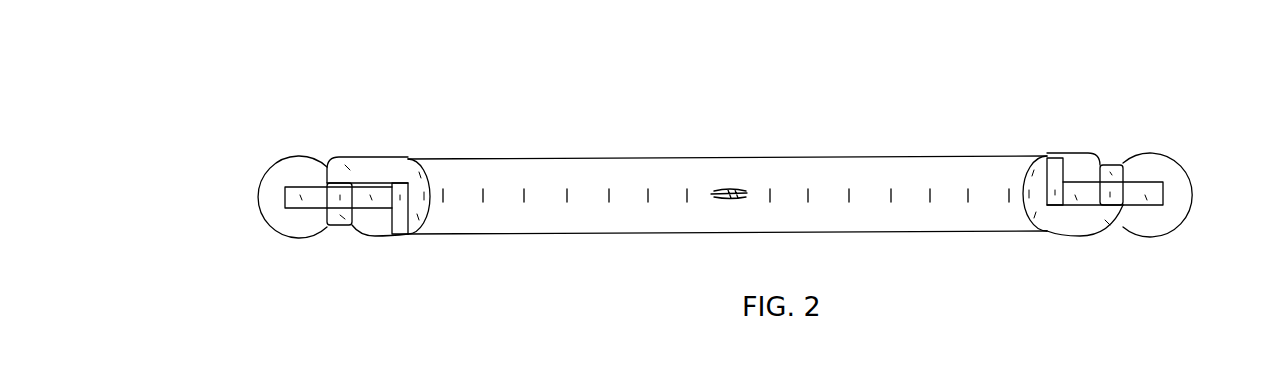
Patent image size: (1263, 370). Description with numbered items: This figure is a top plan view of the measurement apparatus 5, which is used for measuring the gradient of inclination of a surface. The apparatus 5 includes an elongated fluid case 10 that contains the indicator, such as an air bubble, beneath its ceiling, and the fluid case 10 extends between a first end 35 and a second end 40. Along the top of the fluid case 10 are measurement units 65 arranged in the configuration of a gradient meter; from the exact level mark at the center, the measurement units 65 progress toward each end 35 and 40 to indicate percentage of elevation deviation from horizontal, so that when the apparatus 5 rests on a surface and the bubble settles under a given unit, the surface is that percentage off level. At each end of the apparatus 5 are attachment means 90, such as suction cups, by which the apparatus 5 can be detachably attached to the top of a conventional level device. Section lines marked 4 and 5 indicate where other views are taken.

The section line 4- 4 is at (1260, 213).
The measurement apparatus 5 is at (250, 119).
The fluid case 10 is at (903, 155).
The first end 35 is at (410, 157).
The second end 40 is at (1046, 157).
The measurement units 65 is at (608, 222).
The attachment means 90 is at (316, 156).